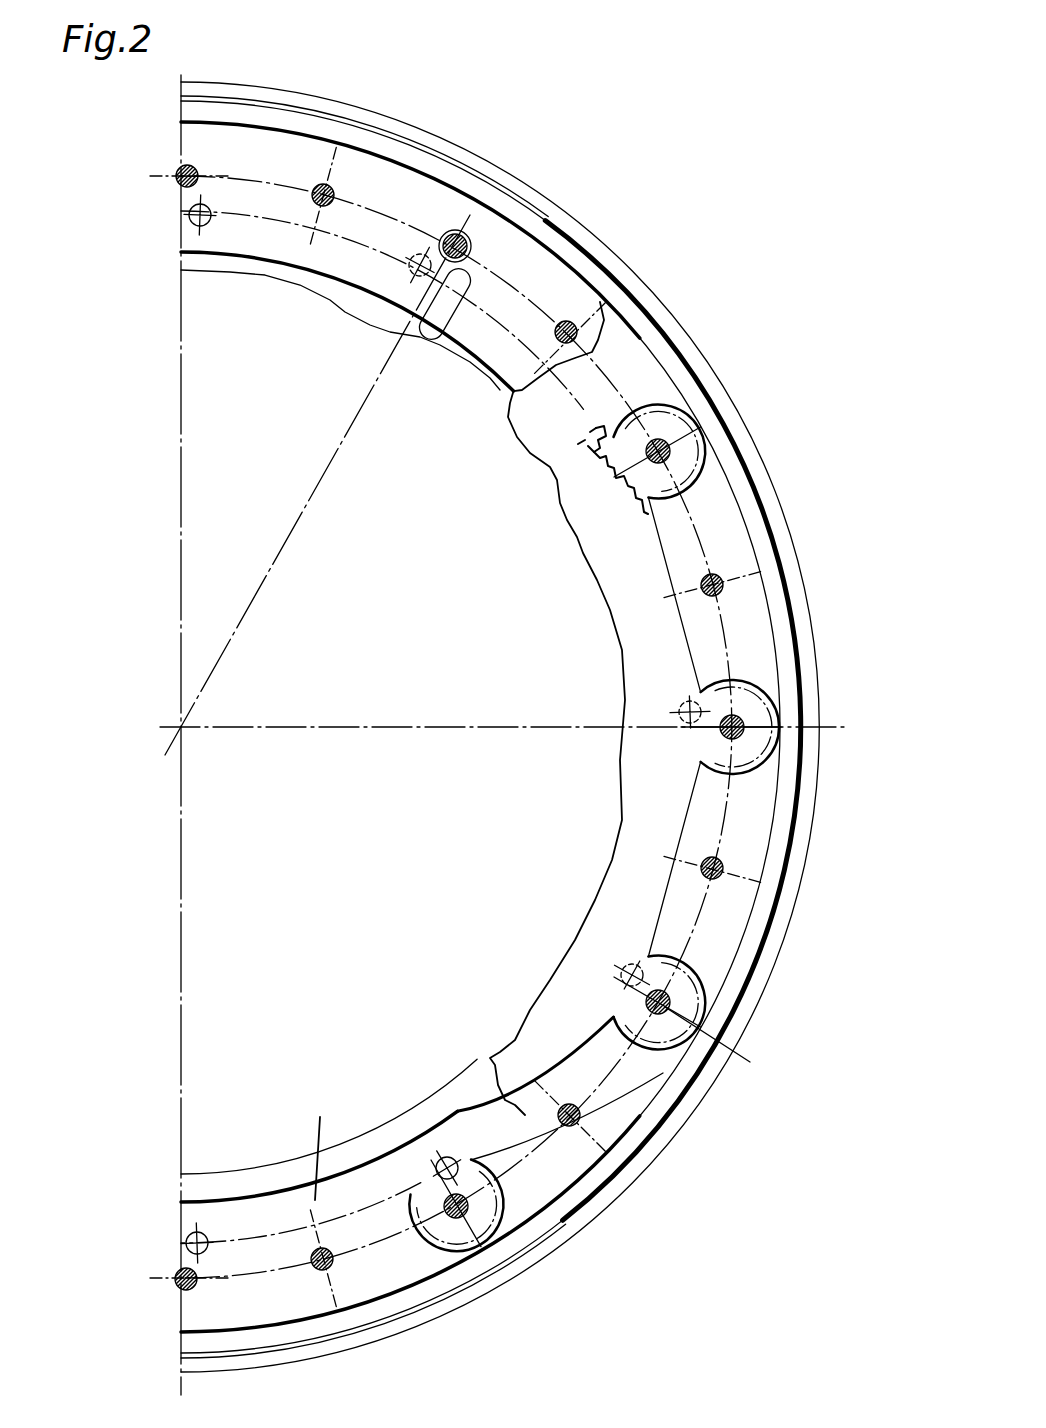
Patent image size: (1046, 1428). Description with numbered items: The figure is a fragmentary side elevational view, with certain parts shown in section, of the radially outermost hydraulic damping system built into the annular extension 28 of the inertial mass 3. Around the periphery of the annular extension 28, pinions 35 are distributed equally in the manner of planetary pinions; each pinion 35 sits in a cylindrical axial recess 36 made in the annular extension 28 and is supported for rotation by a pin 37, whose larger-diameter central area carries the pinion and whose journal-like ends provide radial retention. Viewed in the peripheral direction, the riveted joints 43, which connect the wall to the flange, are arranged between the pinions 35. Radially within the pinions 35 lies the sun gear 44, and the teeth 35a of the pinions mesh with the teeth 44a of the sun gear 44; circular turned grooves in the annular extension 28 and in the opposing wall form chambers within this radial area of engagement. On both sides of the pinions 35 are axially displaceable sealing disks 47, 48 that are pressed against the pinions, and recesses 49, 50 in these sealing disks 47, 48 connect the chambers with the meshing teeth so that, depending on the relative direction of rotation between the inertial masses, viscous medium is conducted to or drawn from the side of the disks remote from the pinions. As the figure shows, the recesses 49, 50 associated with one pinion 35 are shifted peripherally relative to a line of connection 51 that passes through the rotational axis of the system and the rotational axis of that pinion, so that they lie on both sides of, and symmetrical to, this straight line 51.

The inertial mass 3 is at (578, 237).
The annular extension 28 is at (742, 815).
The pinion 35 is at (626, 420).
The teeth of the pinion 35a is at (603, 437).
The axial recess 36 is at (700, 478).
The pin 37 is at (672, 448).
The riveted joint 43 is at (722, 590).
The sun gear 44 is at (570, 468).
The teeth of the sun gear 44a is at (622, 490).
The sealing disk 47 is at (320, 1117).
The sealing disk 48 is at (352, 184).
The recess 49 is at (464, 232).
The recess 50 is at (210, 207).
The line of connection 51 is at (297, 517).